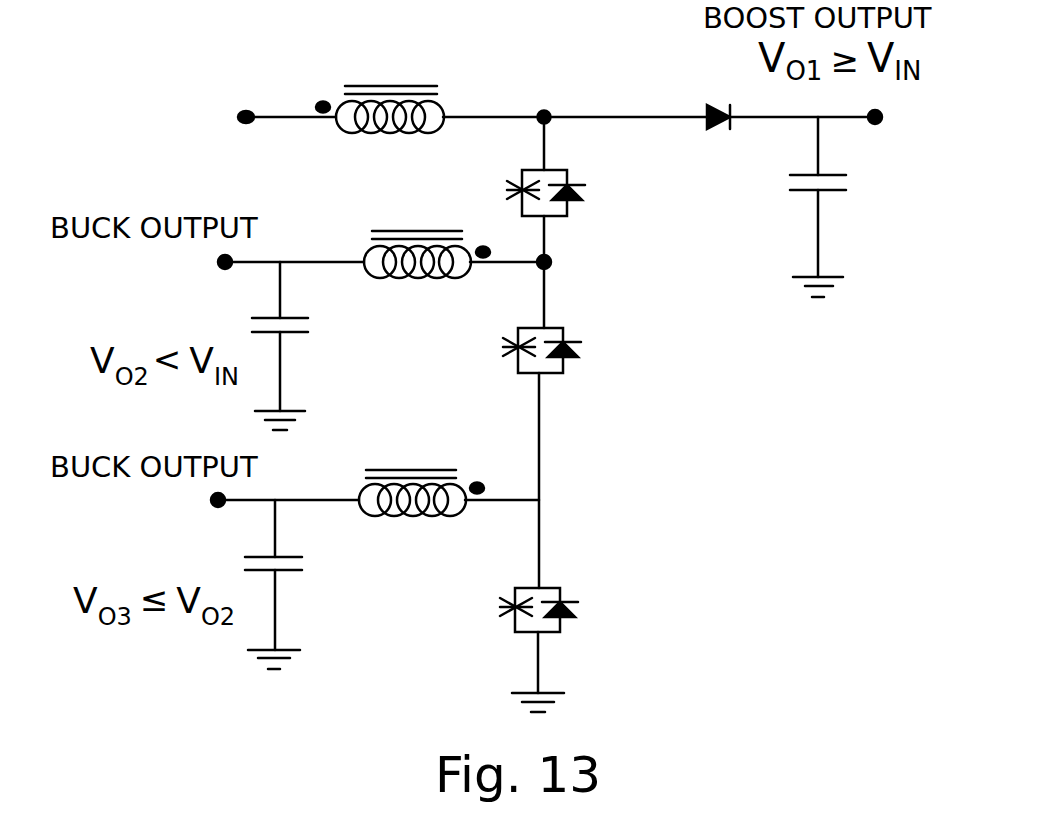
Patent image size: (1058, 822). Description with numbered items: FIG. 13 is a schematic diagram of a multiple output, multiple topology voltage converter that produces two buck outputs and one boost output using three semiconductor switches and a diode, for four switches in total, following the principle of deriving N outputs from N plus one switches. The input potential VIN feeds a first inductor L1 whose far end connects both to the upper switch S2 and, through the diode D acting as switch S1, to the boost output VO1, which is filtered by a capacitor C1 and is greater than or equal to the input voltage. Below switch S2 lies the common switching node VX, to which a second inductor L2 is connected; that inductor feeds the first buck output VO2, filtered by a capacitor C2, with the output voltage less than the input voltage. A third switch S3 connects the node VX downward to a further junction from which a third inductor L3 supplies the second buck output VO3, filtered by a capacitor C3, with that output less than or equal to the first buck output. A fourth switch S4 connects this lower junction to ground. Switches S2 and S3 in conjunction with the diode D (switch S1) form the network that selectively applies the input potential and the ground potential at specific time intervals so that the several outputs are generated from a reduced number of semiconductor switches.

The inductor L1 is at (380, 133).
The inductor L2 is at (427, 279).
The inductor L3 is at (421, 516).
The diode D (switch S1) S1 is at (723, 145).
The switch S2 is at (576, 202).
The switch S3 is at (574, 359).
The switch S4 is at (573, 610).
The capacitor C1 is at (835, 207).
The capacitor C2 is at (306, 346).
The capacitor C3 is at (294, 584).
The input potential VIN is at (217, 129).
The boost output voltage VO1 is at (889, 143).
The buck output voltage VO2 is at (201, 275).
The buck output voltage VO3 is at (199, 517).
The switching node VX is at (570, 269).